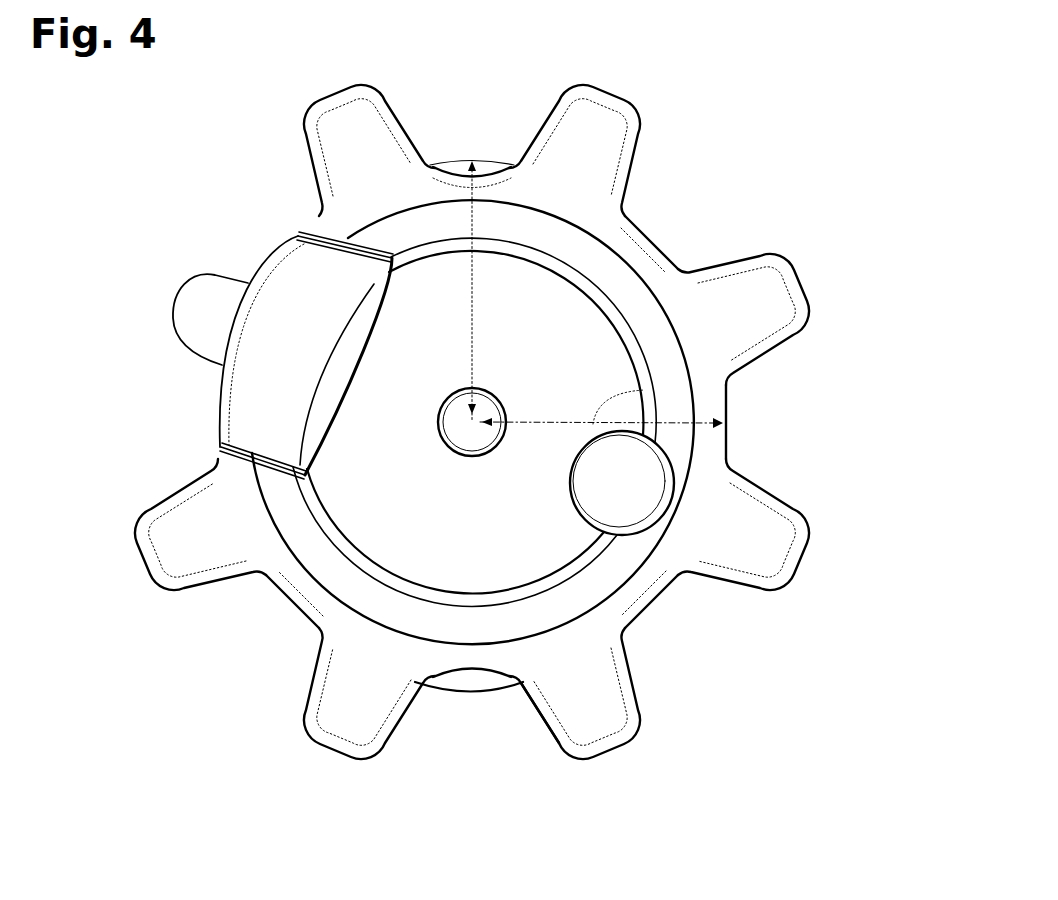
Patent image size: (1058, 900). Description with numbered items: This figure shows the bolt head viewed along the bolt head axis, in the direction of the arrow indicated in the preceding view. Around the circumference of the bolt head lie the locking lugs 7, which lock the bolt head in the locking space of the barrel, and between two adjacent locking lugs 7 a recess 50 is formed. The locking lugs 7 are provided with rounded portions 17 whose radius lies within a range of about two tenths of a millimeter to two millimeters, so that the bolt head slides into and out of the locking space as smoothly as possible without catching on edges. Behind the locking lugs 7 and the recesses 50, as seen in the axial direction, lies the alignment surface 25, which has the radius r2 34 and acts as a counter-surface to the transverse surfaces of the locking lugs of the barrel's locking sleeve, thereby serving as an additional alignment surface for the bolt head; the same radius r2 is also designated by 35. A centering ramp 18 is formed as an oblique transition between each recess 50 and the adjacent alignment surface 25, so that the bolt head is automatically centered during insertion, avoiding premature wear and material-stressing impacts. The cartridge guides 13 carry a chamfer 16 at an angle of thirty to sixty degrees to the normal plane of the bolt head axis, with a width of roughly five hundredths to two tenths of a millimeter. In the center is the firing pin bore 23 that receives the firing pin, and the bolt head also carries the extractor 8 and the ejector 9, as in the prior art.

The locking lugs 7 is at (647, 122).
The extractor 8 is at (210, 297).
The ejector 9 is at (640, 480).
The cartridge guides 13 is at (580, 732).
The chamfer 16 is at (540, 735).
The rounded portions 17 is at (166, 587).
The centering ramp 18 is at (458, 157).
The firing pin bore 23 is at (467, 433).
The alignment surface 25 is at (480, 157).
The radius r2 34 is at (645, 390).
The radius r2 35 is at (509, 245).
The recess 50 is at (672, 656).